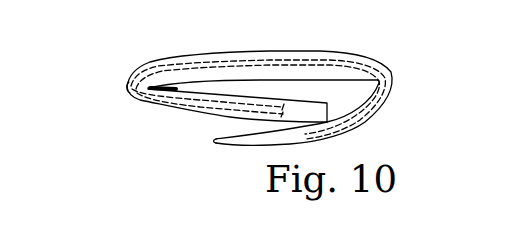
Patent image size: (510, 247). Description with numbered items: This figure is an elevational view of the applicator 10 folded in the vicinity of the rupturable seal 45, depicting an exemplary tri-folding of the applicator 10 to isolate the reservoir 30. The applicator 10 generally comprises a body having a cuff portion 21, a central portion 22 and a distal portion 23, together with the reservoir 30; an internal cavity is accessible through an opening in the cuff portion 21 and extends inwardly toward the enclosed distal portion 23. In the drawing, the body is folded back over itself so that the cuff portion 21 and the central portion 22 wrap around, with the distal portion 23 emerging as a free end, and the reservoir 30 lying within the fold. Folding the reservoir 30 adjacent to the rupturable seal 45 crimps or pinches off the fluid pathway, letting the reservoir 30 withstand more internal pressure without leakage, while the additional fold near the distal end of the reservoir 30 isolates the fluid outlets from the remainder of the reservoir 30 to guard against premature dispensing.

The applicator 10 is at (387, 106).
The cuff portion 21 is at (360, 113).
The central portion 22 is at (347, 52).
The distal portion 23 is at (213, 141).
The reservoir 30 is at (208, 109).
The rupturable seal 45 is at (126, 88).